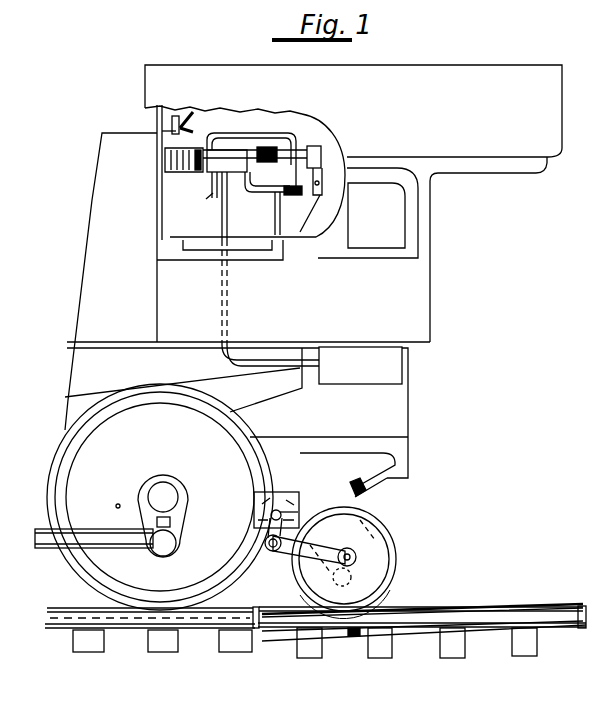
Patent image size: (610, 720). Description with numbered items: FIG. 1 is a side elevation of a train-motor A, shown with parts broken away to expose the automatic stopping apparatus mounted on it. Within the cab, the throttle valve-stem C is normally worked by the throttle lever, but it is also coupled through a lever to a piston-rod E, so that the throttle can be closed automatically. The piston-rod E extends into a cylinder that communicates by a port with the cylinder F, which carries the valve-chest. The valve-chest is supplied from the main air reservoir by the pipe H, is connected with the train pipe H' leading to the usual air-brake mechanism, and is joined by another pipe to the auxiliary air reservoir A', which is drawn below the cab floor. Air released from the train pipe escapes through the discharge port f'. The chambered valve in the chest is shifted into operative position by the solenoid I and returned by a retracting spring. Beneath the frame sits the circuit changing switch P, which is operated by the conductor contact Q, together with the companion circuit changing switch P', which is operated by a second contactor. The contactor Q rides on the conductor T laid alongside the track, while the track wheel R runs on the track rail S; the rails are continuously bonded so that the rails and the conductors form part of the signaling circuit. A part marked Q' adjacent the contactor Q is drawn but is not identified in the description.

The train-motor A is at (313, 281).
The auxiliary air reservoir A' is at (312, 312).
The throttle valve-stem C is at (262, 134).
The piston-rod E is at (302, 150).
The cylinder F is at (214, 148).
The discharge port f' is at (203, 202).
The pipe H is at (267, 203).
The train pipe H' is at (229, 197).
The solenoid I is at (190, 172).
The circuit changing switch P is at (282, 495).
The circuit changing switch P' is at (279, 506).
The conductor contact Q is at (353, 559).
The crank arm Q' is at (305, 548).
The track wheel R is at (154, 497).
The track rail S is at (72, 608).
The conductor T is at (470, 600).